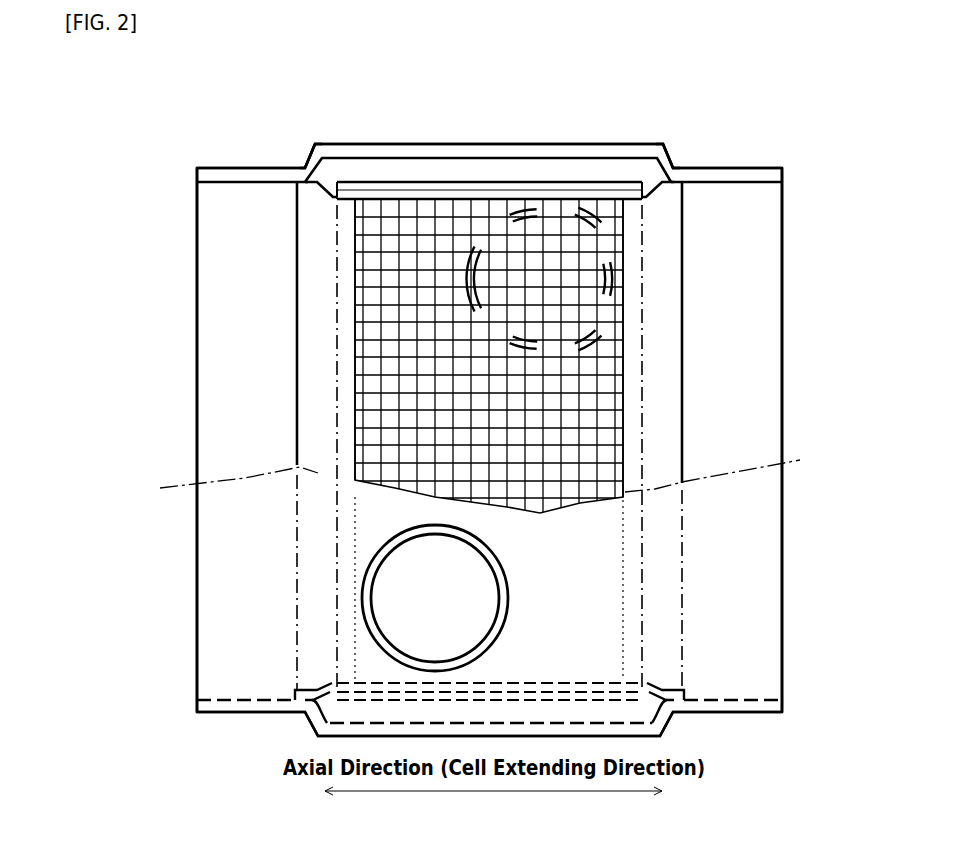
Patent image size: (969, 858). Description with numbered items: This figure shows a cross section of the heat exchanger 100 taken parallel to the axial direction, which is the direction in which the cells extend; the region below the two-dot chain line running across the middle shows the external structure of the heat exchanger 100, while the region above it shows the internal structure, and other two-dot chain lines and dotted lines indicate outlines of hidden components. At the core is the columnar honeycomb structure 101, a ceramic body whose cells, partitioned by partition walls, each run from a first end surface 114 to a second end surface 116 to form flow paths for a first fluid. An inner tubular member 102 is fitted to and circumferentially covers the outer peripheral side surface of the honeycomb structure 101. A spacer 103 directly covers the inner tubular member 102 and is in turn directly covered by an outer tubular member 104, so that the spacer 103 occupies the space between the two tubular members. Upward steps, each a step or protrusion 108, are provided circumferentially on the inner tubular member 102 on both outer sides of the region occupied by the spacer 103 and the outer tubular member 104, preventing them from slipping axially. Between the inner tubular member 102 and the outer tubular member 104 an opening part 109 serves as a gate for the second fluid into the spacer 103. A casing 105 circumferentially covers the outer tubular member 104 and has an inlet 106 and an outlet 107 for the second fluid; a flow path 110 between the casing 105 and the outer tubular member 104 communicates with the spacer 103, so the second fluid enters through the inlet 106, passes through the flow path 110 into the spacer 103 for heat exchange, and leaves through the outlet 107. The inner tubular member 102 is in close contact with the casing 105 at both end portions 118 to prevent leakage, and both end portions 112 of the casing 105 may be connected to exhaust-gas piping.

The heat exchanger 100 is at (215, 145).
The columnar honeycomb structure 101 is at (373, 207).
The inner tubular member 102 is at (300, 186).
The spacer 103 is at (483, 182).
The outer tubular member 104 is at (548, 188).
The casing 105 is at (617, 143).
The inlet 106 is at (372, 562).
The outlet 107 is at (617, 276).
The step or protrusion 108 is at (323, 192).
The opening part 109 is at (657, 165).
The flow path 110 is at (415, 172).
The end portions of the casing 112 is at (197, 366).
The first end surface 114 is at (625, 327).
The second end surface 116 is at (353, 328).
The end portions of the inner tubular member 118 is at (305, 165).